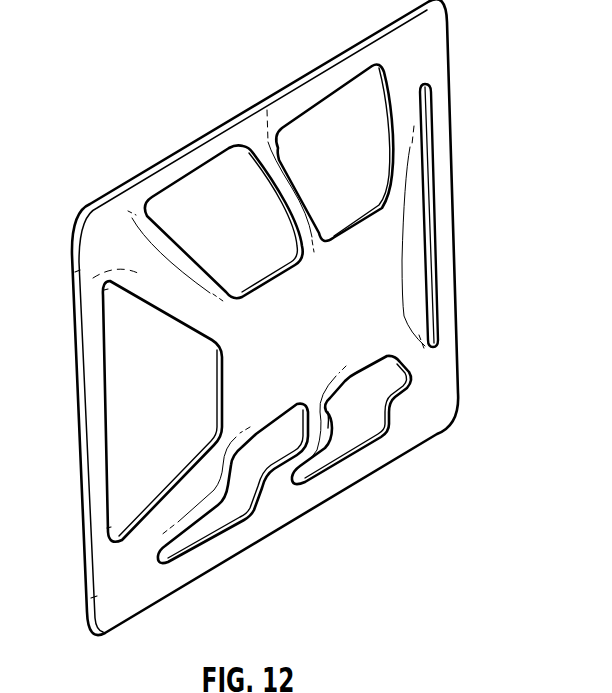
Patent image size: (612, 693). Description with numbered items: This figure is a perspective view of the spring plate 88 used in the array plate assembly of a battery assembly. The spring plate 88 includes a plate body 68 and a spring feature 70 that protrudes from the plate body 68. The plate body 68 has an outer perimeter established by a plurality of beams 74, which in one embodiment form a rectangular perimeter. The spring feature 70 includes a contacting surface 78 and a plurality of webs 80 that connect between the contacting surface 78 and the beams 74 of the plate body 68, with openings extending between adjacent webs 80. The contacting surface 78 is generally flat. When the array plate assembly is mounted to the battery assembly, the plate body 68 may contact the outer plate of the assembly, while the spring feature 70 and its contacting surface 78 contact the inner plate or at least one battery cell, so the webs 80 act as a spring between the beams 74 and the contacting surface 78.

The spring plate 88 is at (267, 317).
The plate body 68 is at (106, 203).
The beams 74 is at (270, 103).
The contacting surface 78 is at (338, 329).
The webs 80 is at (293, 178).
The spring feature 70 is at (272, 414).